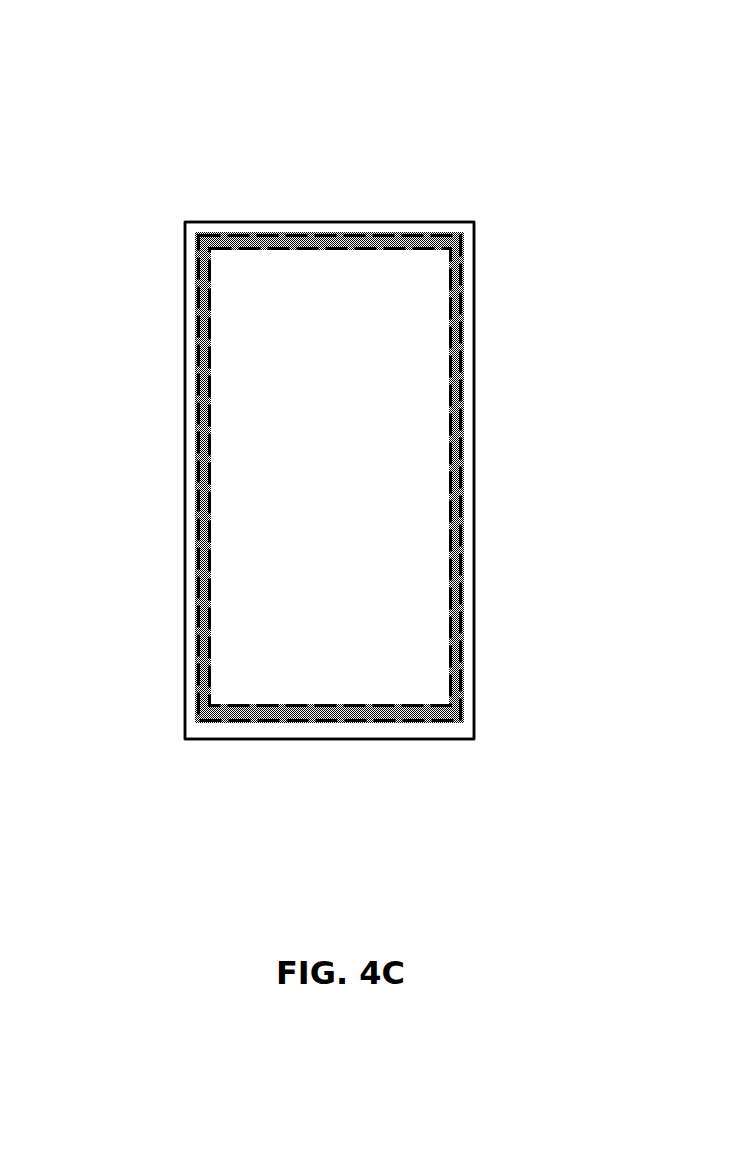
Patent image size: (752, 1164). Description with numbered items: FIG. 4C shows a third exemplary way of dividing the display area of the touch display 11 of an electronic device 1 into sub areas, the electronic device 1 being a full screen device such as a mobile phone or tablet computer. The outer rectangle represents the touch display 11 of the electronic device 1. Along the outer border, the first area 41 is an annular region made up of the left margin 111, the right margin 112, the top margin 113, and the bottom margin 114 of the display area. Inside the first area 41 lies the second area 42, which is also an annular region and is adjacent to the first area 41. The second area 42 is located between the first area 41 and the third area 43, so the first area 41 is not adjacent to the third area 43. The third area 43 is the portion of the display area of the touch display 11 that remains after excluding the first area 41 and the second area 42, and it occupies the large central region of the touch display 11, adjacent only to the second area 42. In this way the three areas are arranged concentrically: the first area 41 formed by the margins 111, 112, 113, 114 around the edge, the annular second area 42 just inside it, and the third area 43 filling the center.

The electronic device 1 is at (296, 96).
The touch display 11 is at (447, 270).
The left margin 111 is at (187, 387).
The right margin 112 is at (478, 393).
The top margin 113 is at (324, 221).
The bottom margin 114 is at (365, 742).
The first area 41 is at (197, 531).
The second area 42 is at (197, 570).
The third area 43 is at (435, 560).